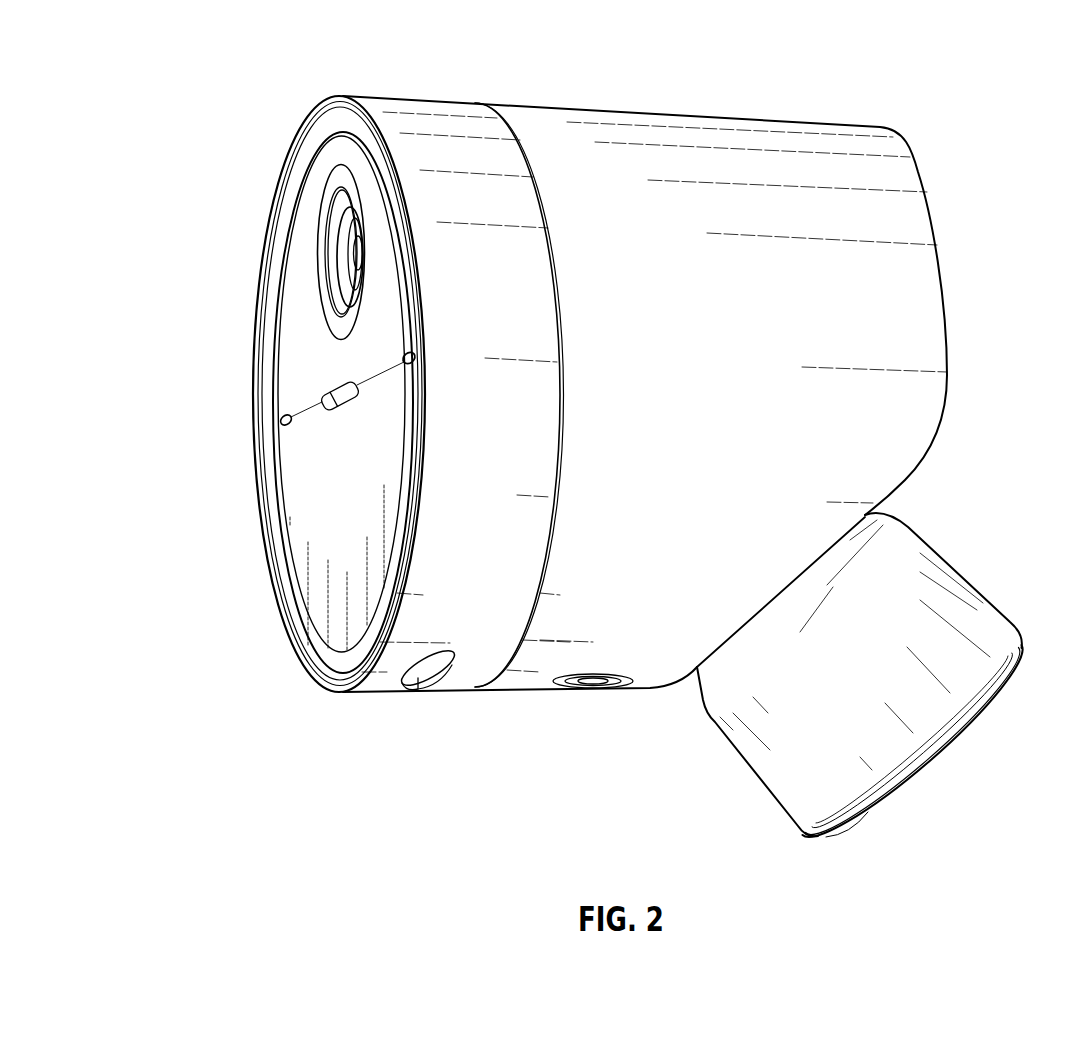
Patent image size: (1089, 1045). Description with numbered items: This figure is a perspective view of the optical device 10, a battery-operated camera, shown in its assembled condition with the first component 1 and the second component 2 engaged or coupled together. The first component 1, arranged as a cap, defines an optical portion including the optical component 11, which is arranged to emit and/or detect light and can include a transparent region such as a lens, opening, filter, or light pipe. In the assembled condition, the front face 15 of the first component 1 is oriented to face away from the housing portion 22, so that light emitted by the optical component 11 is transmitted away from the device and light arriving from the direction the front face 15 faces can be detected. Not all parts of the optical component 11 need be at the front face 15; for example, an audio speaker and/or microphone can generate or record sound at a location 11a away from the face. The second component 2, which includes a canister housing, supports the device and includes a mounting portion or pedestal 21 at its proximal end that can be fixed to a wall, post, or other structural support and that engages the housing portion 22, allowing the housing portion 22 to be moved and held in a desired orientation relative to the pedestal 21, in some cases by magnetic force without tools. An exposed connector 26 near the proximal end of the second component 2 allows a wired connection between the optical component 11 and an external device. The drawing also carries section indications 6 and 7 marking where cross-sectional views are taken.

The first component 1 is at (407, 86).
The second component 2 is at (699, 100).
The optical device 10 is at (993, 68).
The optical component 11 is at (347, 253).
The location of audio speaker and/or microphone 11a is at (418, 684).
The front face 15 is at (340, 621).
The mounting portion (pedestal) 21 is at (910, 697).
The housing portion 22 is at (934, 307).
The exposed connector 26 is at (595, 689).
The section line 6 is at (330, 392).
The section line 7 is at (395, 495).